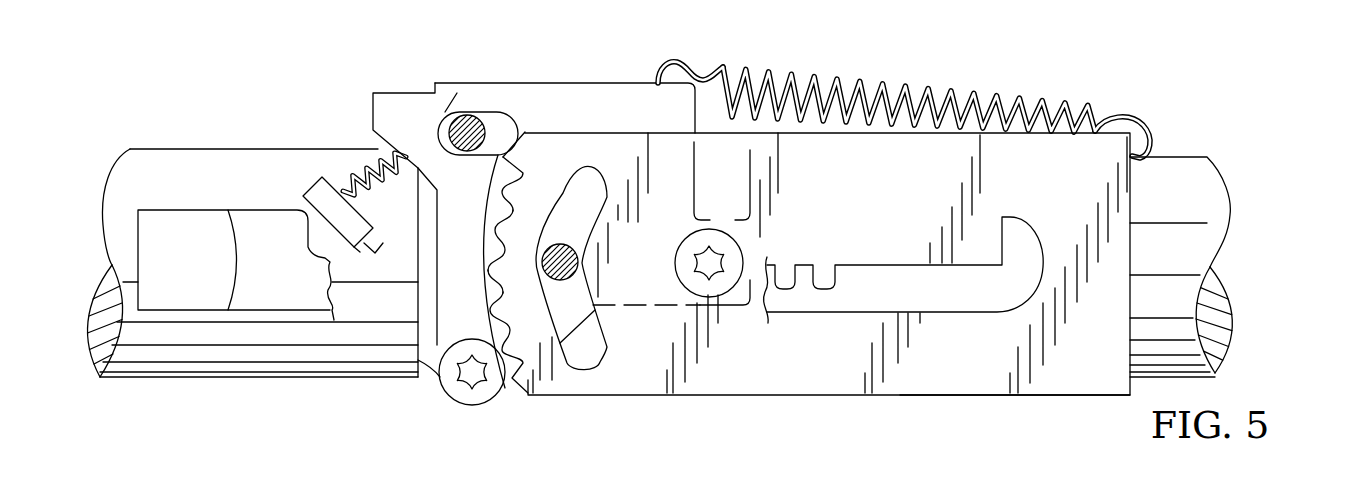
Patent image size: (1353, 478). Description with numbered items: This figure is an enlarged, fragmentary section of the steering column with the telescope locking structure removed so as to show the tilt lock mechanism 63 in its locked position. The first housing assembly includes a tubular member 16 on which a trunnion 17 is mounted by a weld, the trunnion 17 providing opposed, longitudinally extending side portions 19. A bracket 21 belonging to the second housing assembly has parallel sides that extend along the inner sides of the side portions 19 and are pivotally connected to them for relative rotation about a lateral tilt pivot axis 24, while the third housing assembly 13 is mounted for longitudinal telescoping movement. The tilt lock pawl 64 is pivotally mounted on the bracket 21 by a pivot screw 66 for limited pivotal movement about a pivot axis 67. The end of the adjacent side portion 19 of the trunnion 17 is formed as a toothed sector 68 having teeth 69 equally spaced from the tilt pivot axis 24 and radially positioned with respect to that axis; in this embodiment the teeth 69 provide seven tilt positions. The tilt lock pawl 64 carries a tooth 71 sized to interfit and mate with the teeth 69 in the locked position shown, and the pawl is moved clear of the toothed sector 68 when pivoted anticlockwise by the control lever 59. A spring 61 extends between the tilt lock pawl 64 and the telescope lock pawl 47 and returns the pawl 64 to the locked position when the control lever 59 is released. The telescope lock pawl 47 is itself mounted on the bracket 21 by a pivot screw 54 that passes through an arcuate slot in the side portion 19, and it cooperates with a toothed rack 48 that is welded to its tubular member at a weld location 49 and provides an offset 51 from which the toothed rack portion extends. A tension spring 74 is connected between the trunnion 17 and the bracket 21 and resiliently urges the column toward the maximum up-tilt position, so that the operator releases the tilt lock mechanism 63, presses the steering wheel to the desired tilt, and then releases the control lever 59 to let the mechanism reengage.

The third housing assembly 13 is at (210, 145).
The tubular member 16 is at (1183, 155).
The trunnion 17 is at (1022, 398).
The side portions 19 is at (840, 198).
The bracket 21 is at (596, 95).
The lateral tilt pivot axis 24 is at (712, 261).
The telescope lock pawl 47 is at (318, 193).
The toothed rack 48 is at (878, 300).
The weld location 49 is at (173, 285).
The offset 51 is at (277, 285).
The pivot screw 54 is at (566, 262).
The control lever 59 is at (461, 118).
The spring 61 is at (375, 208).
The tilt lock mechanism 63 is at (499, 126).
The tilt lock pawl 64 is at (404, 127).
The pivot screw 66 is at (498, 385).
The pivot axis 67 is at (472, 372).
The toothed sector 68 is at (500, 302).
The teeth 69 is at (500, 247).
The tooth 71 is at (490, 262).
The tension spring 74 is at (910, 100).